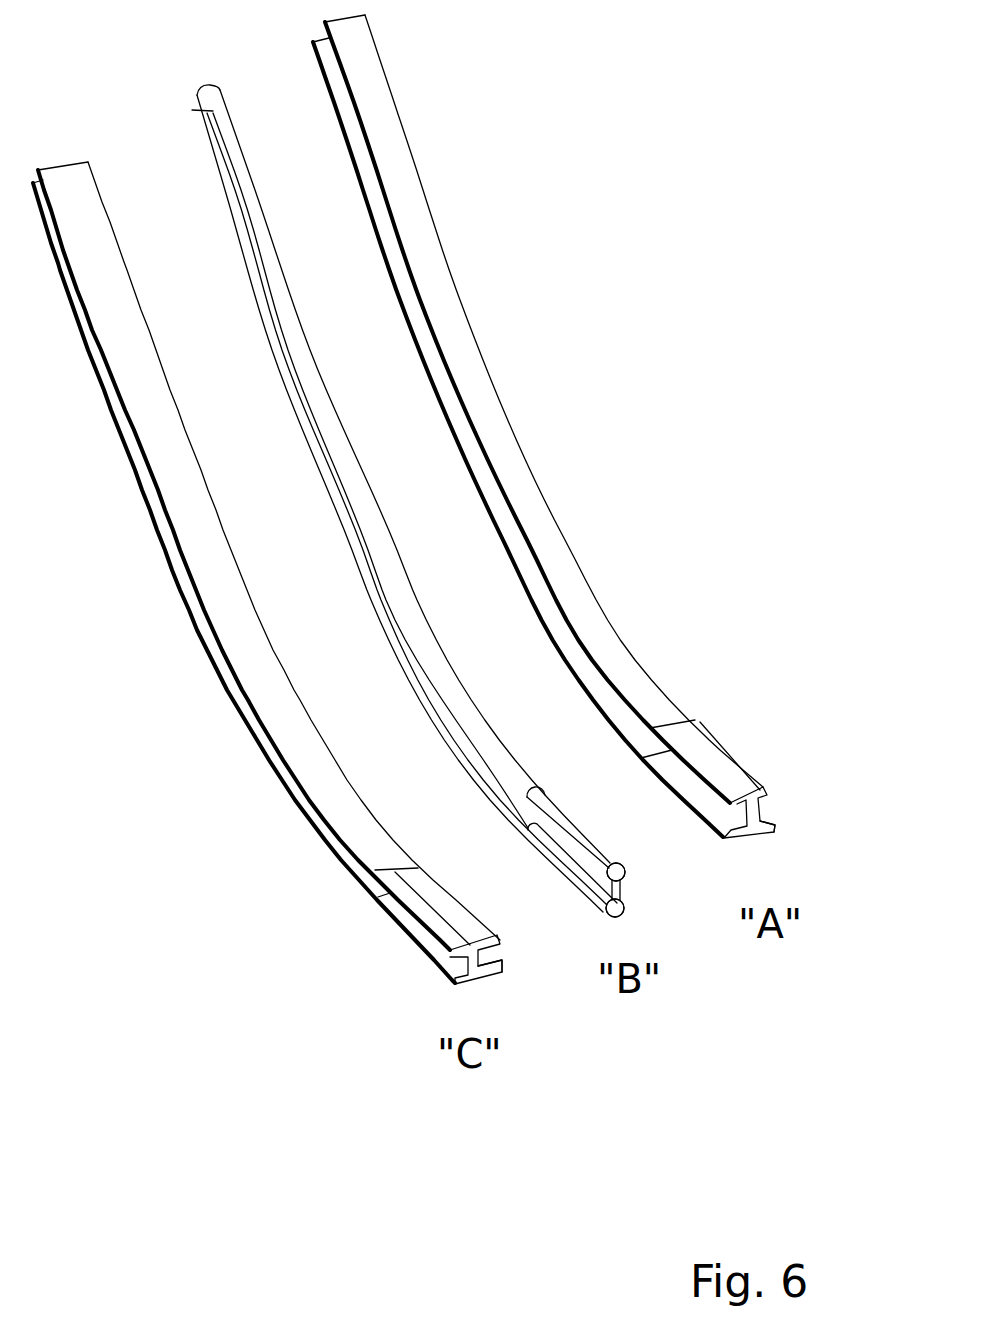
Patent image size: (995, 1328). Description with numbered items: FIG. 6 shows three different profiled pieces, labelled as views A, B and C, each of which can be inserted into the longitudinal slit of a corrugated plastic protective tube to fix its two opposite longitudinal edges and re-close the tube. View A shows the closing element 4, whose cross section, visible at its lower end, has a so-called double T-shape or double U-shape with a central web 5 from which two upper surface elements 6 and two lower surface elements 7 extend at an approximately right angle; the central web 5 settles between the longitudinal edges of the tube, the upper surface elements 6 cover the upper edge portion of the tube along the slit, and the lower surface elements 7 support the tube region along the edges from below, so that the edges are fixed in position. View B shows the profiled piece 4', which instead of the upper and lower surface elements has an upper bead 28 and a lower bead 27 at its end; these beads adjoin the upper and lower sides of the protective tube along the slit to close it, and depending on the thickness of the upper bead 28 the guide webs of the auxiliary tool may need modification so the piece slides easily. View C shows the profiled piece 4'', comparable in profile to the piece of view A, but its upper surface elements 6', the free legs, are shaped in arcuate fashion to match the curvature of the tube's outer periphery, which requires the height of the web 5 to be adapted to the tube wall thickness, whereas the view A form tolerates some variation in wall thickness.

The closing element 4 is at (538, 426).
The profiled piece 4' is at (404, 498).
The profiled piece 4'' is at (266, 572).
The central web 5 is at (757, 808).
The upper surface elements 6 is at (770, 736).
The upper surface elements 6' is at (378, 922).
The lower surface elements 7 is at (767, 827).
The lower bead 27 is at (618, 908).
The upper bead 28 is at (615, 867).